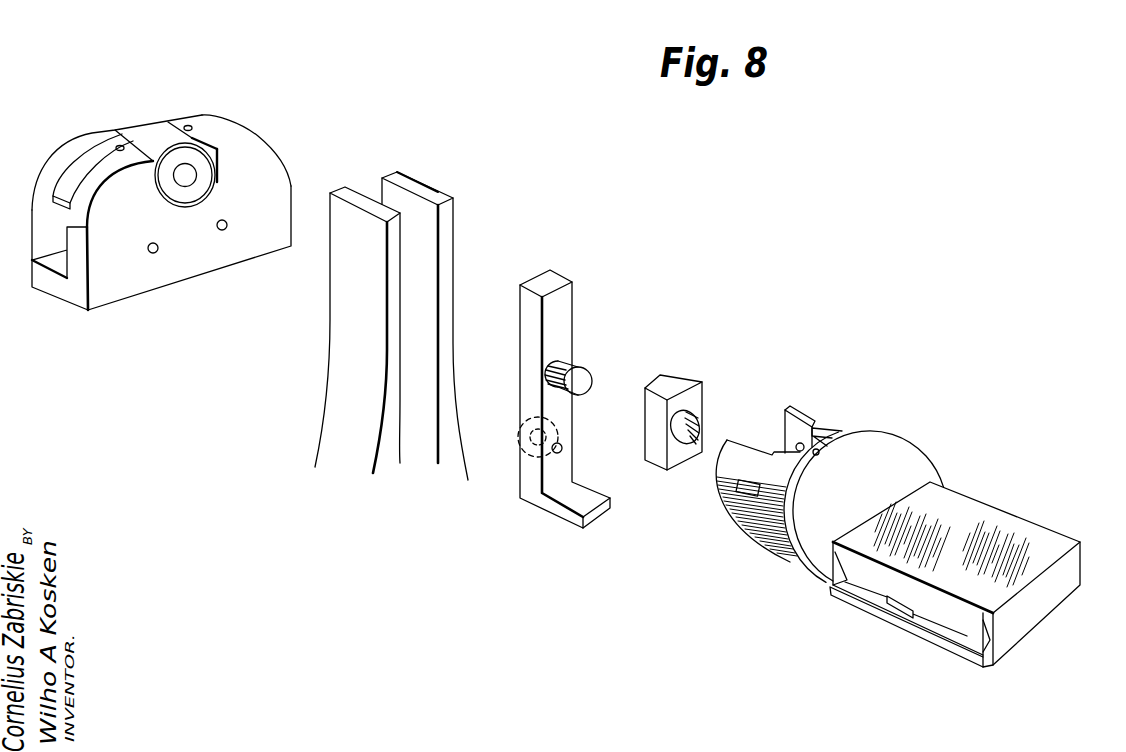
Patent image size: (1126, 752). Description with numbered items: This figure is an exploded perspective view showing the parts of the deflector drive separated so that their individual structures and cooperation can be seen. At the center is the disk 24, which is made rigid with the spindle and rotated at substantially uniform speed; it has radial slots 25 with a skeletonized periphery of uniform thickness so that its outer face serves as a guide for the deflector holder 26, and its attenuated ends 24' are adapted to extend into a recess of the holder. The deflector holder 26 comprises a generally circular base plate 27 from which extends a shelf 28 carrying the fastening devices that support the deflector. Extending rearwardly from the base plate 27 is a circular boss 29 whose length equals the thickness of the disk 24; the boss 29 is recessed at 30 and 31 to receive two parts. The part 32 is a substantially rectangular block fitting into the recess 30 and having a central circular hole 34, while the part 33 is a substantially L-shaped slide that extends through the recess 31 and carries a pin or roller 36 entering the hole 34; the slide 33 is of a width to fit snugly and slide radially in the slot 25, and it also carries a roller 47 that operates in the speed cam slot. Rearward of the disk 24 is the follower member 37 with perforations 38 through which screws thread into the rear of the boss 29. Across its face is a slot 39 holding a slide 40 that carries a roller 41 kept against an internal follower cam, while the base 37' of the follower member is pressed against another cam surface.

The disk 24 is at (357, 346).
The attenuated ends 24' is at (446, 326).
The radial slots 25 is at (427, 260).
The deflector holder 26 is at (827, 585).
The base plate 27 is at (890, 452).
The shelf 28 is at (963, 653).
The circular boss 29 is at (808, 422).
The recess 30 is at (829, 430).
The recess 31 is at (807, 418).
The block 32 is at (677, 378).
The slide 33 is at (567, 293).
The circular hole 34 is at (698, 415).
The pin or roller 36 is at (579, 370).
The follower member 37 is at (161, 210).
The base of follower member 37' is at (59, 280).
The perforations 38 is at (152, 253).
The slot 39 is at (70, 163).
The slide 40 is at (145, 133).
The roller 41 is at (206, 177).
The roller 47 is at (520, 452).